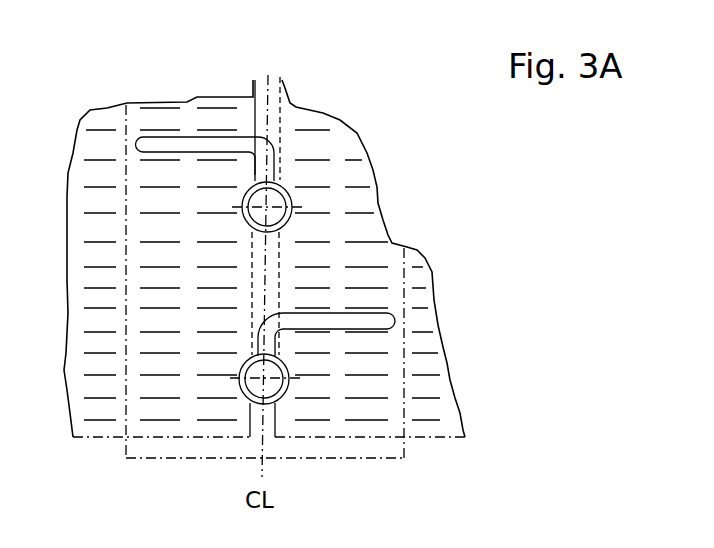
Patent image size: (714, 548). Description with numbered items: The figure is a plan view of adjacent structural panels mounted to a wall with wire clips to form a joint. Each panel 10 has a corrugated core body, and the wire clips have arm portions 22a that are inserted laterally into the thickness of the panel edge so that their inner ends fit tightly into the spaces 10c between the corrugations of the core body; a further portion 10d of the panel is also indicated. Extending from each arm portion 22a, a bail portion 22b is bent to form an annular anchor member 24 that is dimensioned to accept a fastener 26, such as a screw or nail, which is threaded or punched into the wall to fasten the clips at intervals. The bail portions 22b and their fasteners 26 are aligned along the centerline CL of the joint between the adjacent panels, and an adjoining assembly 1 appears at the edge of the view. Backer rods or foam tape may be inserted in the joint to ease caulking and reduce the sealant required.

The panel 10 is at (348, 160).
The spaces between corrugations 10c is at (420, 392).
The lower portion of body 10d is at (519, 547).
The arm portion 22a is at (202, 148).
The bail portion 22b is at (285, 183).
The annular anchor member 24 is at (405, 451).
The fastening screw 26 is at (275, 203).
The assembly 1 is at (667, 547).